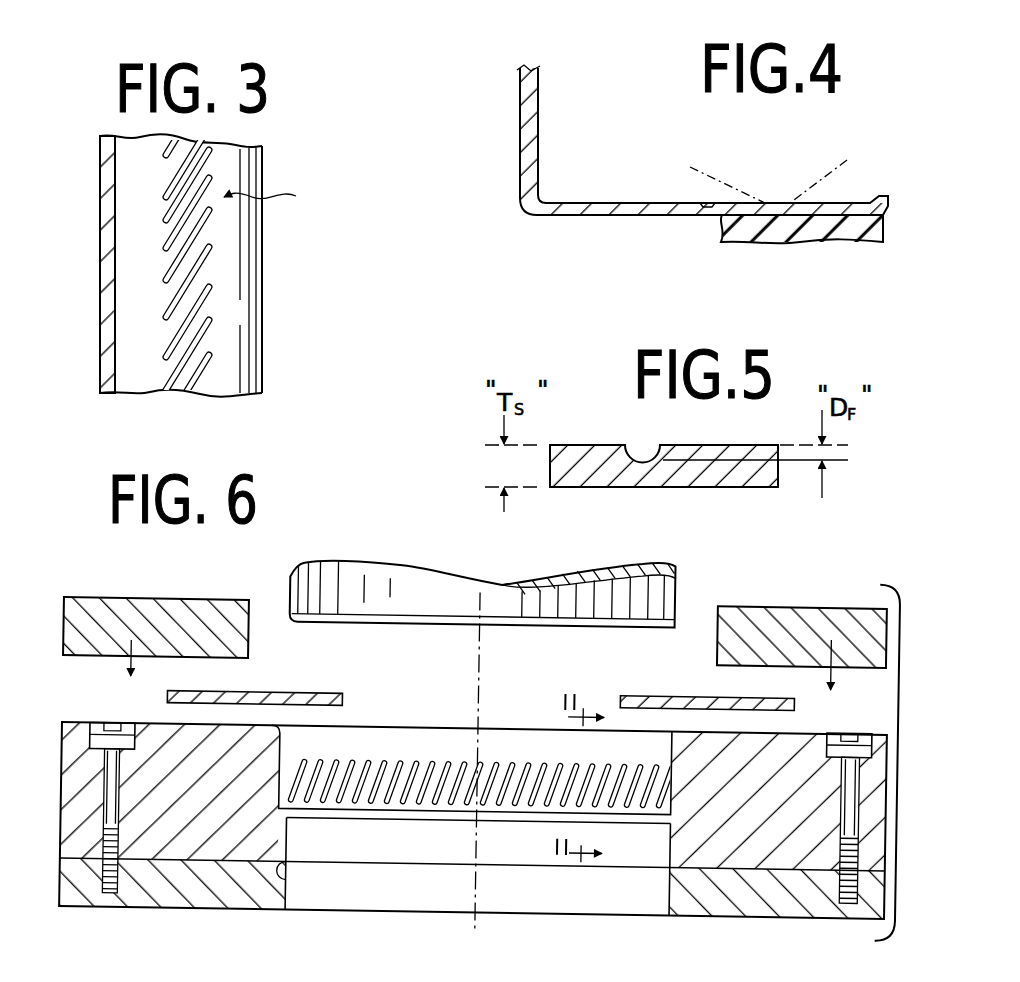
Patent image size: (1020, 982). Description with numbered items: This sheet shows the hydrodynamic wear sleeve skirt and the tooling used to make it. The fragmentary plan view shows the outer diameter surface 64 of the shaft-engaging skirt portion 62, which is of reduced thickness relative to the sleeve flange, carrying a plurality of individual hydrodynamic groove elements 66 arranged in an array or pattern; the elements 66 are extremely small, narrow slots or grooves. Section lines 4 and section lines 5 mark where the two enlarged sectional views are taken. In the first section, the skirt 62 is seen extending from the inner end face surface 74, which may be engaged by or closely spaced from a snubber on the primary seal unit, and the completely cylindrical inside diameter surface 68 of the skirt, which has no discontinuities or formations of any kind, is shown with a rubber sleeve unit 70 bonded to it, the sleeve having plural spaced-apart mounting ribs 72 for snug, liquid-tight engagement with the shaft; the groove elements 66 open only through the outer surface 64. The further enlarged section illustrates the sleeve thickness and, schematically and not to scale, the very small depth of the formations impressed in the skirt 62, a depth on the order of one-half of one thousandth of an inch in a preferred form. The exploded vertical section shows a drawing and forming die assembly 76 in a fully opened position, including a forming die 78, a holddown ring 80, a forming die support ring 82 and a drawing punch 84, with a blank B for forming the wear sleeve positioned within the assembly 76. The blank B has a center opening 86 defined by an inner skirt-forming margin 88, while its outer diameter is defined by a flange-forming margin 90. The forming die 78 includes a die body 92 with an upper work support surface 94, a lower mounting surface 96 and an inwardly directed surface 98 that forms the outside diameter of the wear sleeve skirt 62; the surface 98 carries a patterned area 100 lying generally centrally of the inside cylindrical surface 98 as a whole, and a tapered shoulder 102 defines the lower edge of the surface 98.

In FIG. 3, the section lines 4— 4 is at (150, 313).
In FIG. 3, the section lines 5— 5 is at (170, 253).
In FIG. 4, the skirt portion 62 is at (690, 216).
In FIG. 5, the skirt portion 62 is at (692, 468).
In FIG. 4, the outer diameter surface 64 is at (661, 203).
In FIG. 4, the hydrodynamic groove elements 66 is at (708, 203).
In FIG. 4, the inside diameter surface 68 is at (592, 216).
In FIG. 4, the rubber sleeve unit 70 is at (848, 228).
In FIG. 4, the mounting ribs 72 is at (833, 243).
In FIG. 4, the inner end face surface 74 is at (540, 103).
In FIG. 6, the drawing and forming die assembly 76 is at (916, 708).
In FIG. 6, the forming die 78 is at (51, 753).
In FIG. 6, the holddown ring 80 is at (49, 600).
In FIG. 6, the forming die support ring 82 is at (191, 881).
In FIG. 6, the drawing punch 84 is at (456, 550).
In FIG. 6, the center opening 86 is at (348, 689).
In FIG. 6, the skirt-forming margin 88 is at (624, 682).
In FIG. 6, the flange-forming margin 90 is at (795, 696).
In FIG. 6, the die body 92 is at (217, 805).
In FIG. 6, the work support surface 94 is at (139, 720).
In FIG. 6, the lower mounting surface 96 is at (287, 880).
In FIG. 6, the inwardly directed surface 98 is at (283, 732).
In FIG. 6, the patterned area 100 is at (683, 757).
In FIG. 6, the tapered shoulder 102 is at (291, 806).
In FIG. 6, the blank B is at (264, 676).